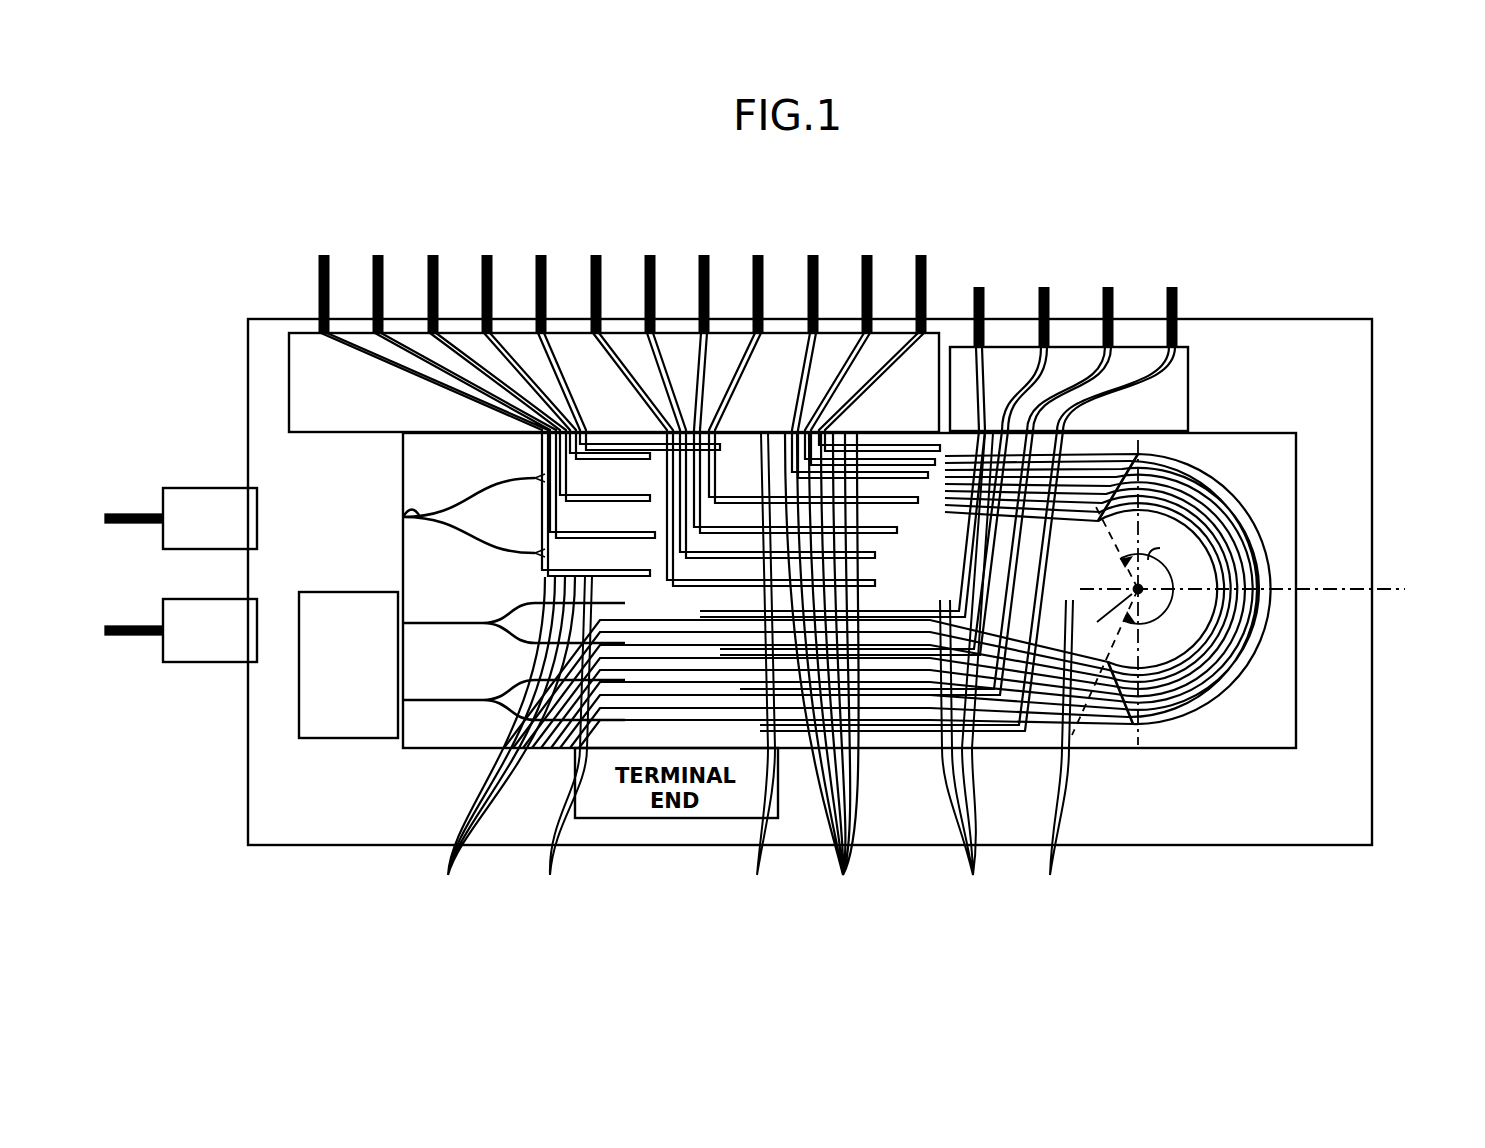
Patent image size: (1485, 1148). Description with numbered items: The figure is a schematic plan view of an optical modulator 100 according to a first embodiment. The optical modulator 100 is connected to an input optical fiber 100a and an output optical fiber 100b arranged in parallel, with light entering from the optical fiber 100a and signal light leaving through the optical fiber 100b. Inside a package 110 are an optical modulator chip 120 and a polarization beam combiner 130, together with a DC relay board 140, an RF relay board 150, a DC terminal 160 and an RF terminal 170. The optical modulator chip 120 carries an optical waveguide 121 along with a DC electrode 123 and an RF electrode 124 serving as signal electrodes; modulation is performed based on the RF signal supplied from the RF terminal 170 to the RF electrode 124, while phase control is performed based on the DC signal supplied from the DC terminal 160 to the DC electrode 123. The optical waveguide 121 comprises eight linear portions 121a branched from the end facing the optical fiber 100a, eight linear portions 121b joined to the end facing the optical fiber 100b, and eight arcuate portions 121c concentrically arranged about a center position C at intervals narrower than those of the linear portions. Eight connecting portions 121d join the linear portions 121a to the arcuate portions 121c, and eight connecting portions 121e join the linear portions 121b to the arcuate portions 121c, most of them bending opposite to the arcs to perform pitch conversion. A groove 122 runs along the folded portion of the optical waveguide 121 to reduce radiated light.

The optical modulator 100 is at (1303, 195).
The input optical fiber 100a is at (127, 512).
The output optical fiber 100b is at (129, 640).
The package 110 is at (1262, 330).
The optical modulator chip 120 is at (1296, 490).
The optical waveguide 121 is at (403, 517).
The linear portions 121a is at (762, 671).
The linear portions 121b is at (558, 743).
The arcuate portions 121c is at (1268, 543).
The connecting portions 121d is at (1080, 498).
The connecting portions 121e is at (1055, 754).
The groove 122 is at (1272, 622).
The DC electrode 123 is at (748, 621).
The RF electrode 124 is at (969, 671).
The polarization beam combiner 130 is at (350, 592).
The DC relay board 140 is at (289, 370).
The RF relay board 150 is at (1188, 395).
The DC terminal 160 is at (935, 233).
The RF terminal 170 is at (1188, 262).